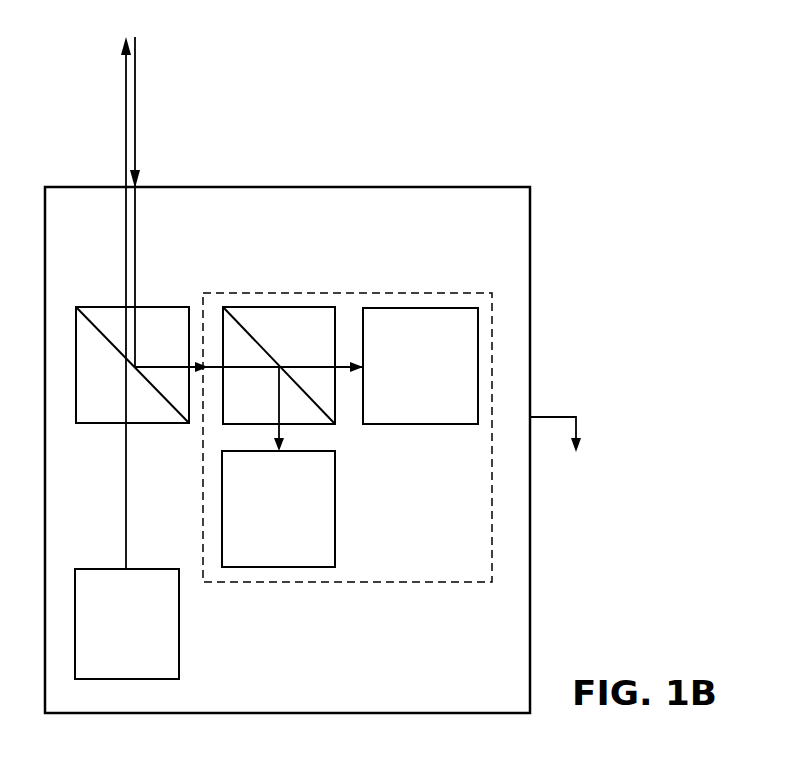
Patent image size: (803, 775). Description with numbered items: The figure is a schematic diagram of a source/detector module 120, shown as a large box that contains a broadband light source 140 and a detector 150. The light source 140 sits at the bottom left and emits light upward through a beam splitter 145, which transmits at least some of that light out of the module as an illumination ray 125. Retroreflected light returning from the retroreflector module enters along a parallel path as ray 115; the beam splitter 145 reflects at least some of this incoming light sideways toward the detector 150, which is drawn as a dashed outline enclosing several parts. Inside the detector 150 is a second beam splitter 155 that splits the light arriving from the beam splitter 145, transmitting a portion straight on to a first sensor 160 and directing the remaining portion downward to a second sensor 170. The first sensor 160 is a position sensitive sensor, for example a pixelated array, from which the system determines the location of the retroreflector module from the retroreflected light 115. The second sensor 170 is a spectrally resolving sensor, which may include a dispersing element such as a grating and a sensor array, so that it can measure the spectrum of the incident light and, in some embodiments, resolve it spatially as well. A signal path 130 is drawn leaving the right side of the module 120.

The source/detector module 120 is at (452, 142).
The illumination ray 125 is at (125, 132).
The retroreflected light ray 115 is at (137, 118).
The beam splitter 145 is at (177, 307).
The detector 150 is at (342, 582).
The beam splitter 155 is at (281, 307).
The first sensor 160 is at (440, 376).
The second sensor 170 is at (299, 514).
The broadband light source 140 is at (151, 630).
The output signal 130 is at (564, 449).